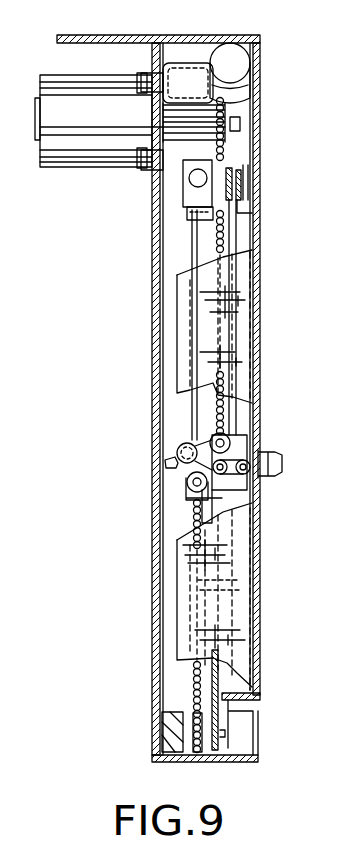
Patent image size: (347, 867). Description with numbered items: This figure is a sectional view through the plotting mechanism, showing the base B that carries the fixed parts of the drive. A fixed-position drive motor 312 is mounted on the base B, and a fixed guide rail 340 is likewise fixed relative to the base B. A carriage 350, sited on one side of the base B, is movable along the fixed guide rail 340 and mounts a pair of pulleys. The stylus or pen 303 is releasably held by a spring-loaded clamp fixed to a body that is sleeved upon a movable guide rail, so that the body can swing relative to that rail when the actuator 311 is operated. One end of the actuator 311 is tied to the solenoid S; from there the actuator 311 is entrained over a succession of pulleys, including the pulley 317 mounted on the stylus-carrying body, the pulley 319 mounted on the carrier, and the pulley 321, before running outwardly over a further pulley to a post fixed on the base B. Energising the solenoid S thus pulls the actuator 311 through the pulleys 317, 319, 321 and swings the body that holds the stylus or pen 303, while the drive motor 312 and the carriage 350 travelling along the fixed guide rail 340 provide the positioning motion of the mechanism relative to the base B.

The base B is at (152, 291).
The solenoid S is at (231, 53).
The drive motor 312 is at (88, 155).
The carriage 350 is at (187, 197).
The fixed guide rail 340 is at (199, 176).
The actuator 311 is at (235, 240).
The pulley 317 is at (230, 444).
The pulley 319 is at (176, 446).
The pulley 321 is at (185, 493).
The stylus or pen 303 is at (168, 467).